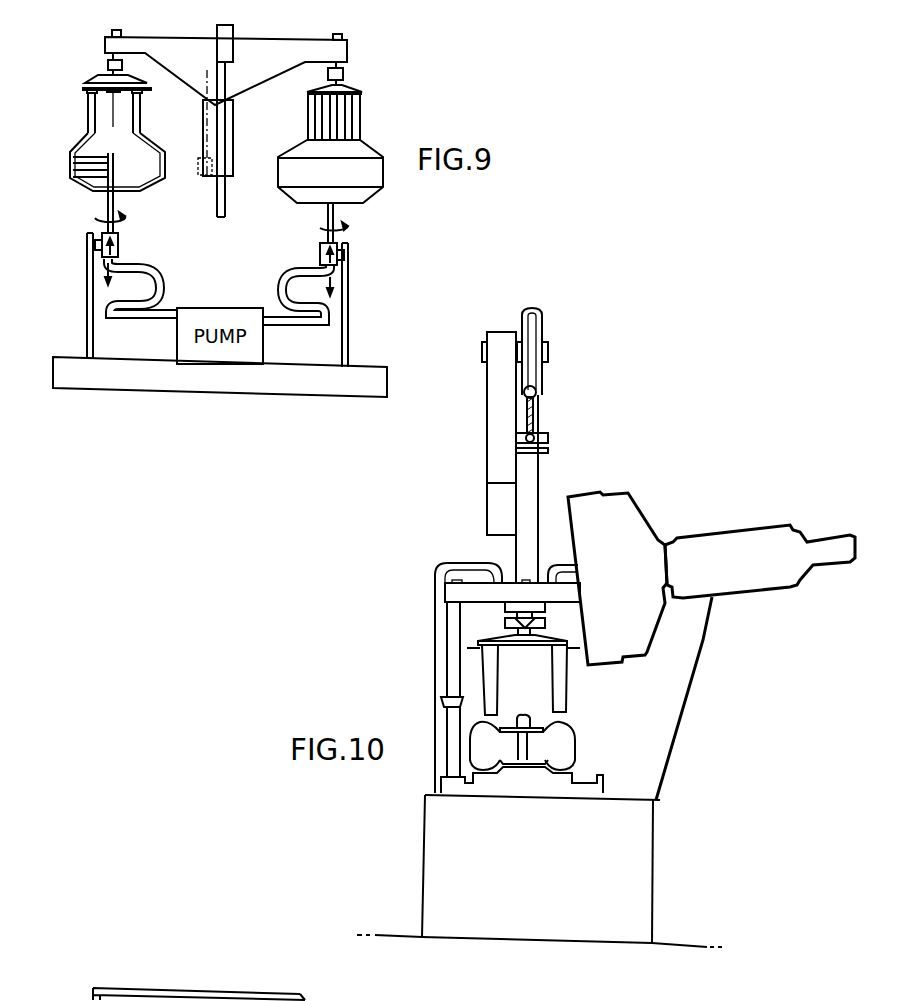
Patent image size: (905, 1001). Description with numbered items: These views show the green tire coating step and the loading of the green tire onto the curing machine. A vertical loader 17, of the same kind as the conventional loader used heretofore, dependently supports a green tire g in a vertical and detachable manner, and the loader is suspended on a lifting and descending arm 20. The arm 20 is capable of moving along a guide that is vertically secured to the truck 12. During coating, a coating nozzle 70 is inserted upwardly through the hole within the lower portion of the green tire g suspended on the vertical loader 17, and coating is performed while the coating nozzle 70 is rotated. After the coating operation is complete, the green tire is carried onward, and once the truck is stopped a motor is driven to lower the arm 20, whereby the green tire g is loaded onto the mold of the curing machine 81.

In FIG. 9, the lifting and descending arm 20 is at (266, 72).
In FIG. 9, the vertical loader 17 is at (143, 120).
In FIG. 10, the vertical loader 17 is at (565, 693).
In FIG. 9, the green tire g is at (155, 187).
In FIG. 10, the green tire g is at (575, 748).
In FIG. 9, the coating nozzle 70 is at (107, 202).
In FIG. 10, the truck 12 is at (487, 455).
In FIG. 10, the curing machine 81 is at (652, 797).